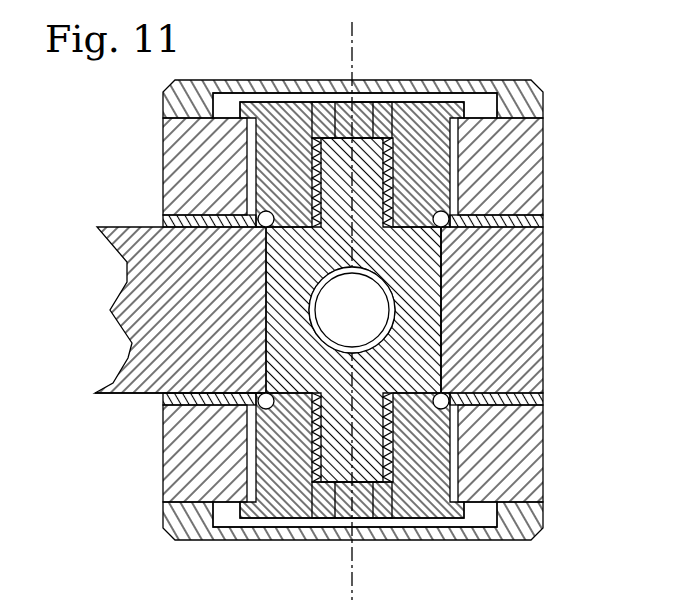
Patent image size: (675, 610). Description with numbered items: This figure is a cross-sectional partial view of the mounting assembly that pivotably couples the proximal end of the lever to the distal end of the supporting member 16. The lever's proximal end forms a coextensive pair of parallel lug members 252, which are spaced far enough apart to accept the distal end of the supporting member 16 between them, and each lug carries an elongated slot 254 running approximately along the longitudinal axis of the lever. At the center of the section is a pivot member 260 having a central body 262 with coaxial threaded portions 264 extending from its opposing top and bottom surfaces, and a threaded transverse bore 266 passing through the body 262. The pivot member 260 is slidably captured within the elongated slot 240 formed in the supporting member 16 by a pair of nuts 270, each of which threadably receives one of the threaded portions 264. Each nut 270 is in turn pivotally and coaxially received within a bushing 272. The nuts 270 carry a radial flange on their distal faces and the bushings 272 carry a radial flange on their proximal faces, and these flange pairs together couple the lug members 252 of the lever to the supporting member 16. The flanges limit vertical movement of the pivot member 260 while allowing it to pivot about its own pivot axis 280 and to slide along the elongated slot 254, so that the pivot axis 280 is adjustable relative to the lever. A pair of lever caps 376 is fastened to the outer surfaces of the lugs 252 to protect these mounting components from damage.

The supporting member 16 is at (122, 393).
The elongated slot 240 is at (268, 290).
The lug members 252 is at (545, 133).
The elongated slot 254 is at (268, 166).
The pivot member 260 is at (447, 315).
The central body 262 is at (446, 348).
The threaded portions 264 is at (393, 200).
The threaded transverse bore 266 is at (378, 289).
The nuts 270 is at (470, 106).
The bushings 272 is at (545, 218).
The pivot axis 280 is at (360, 72).
The lever caps 376 is at (526, 82).